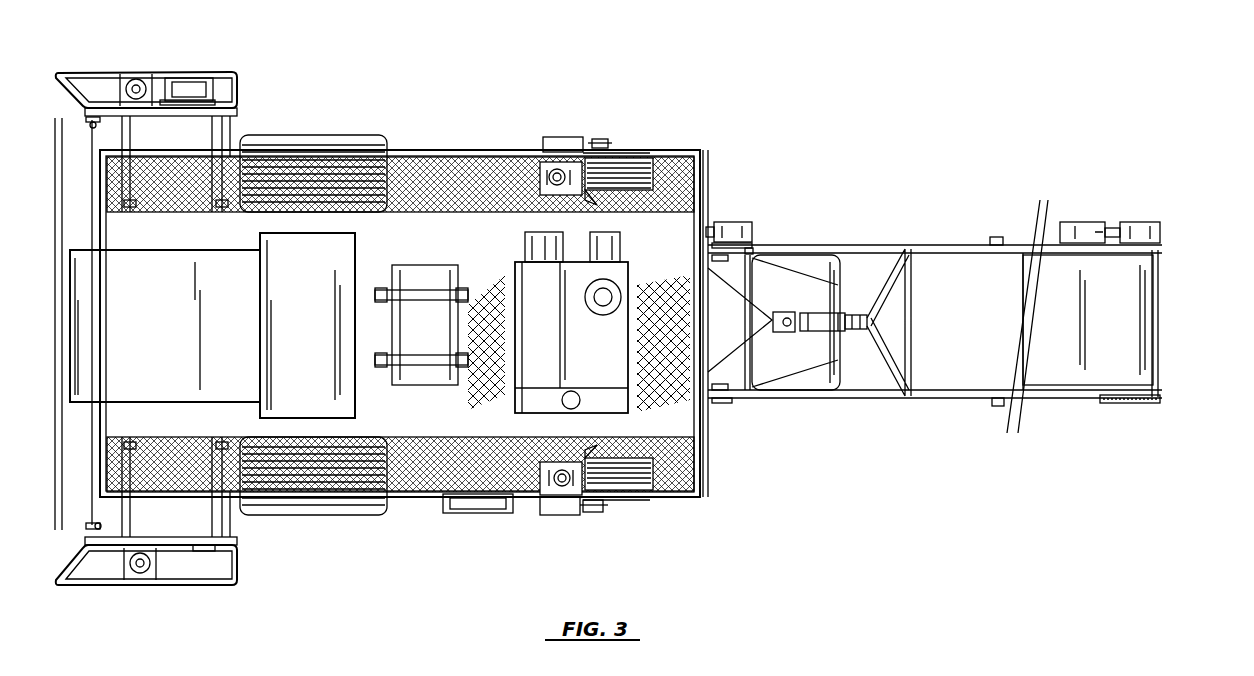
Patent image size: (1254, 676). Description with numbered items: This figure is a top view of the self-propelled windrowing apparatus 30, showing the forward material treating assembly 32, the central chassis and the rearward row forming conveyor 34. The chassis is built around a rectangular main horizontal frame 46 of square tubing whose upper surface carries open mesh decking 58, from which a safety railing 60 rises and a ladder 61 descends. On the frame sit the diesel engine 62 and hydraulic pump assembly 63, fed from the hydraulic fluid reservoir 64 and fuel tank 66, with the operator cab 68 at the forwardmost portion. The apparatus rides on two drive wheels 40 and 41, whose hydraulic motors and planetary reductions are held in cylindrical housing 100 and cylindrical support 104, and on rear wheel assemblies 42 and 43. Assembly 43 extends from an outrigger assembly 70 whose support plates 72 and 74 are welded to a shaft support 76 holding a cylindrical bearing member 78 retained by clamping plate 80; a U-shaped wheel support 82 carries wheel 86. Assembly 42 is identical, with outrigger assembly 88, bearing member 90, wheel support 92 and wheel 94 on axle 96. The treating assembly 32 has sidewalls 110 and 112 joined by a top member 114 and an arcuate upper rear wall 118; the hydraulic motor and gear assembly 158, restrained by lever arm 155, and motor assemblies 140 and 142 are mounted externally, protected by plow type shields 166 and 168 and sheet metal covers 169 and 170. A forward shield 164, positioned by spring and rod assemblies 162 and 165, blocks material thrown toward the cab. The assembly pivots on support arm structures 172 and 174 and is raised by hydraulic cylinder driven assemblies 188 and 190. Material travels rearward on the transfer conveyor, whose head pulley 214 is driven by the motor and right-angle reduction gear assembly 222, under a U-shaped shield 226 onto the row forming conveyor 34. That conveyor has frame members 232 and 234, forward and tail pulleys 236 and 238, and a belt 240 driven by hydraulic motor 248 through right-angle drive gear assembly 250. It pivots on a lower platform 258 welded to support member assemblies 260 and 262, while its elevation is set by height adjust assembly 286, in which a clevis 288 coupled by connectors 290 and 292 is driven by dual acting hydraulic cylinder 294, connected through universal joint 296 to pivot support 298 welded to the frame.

The windrowing apparatus 30 is at (873, 150).
The material treating assembly 32 is at (298, 88).
The row forming conveyor 34 is at (1150, 196).
The drive wheel 40 is at (350, 514).
The drive wheel 41 is at (328, 136).
The rear wheel assembly 42 is at (664, 125).
The rear wheel assembly 43 is at (630, 546).
The main horizontal frame 46 is at (708, 226).
The open mesh decking 58 is at (480, 175).
The safety railing 60 is at (447, 153).
The ladder 61 is at (485, 513).
The diesel engine 62 is at (520, 405).
The hydraulic pump assembly 63 is at (605, 245).
The hydraulic fluid reservoir 64 is at (340, 412).
The fuel tank 66 is at (425, 275).
The operator cab 68 is at (128, 336).
The outrigger assembly 70 is at (532, 543).
The support plate 72 is at (563, 462).
The support plate 74 is at (592, 456).
The shaft support 76 is at (542, 497).
The cylindrical bearing member 78 is at (563, 497).
The outer clamping plate 80 is at (594, 512).
The U-shaped wheel support 82 is at (552, 515).
The wheel 86 is at (640, 500).
The outrigger assembly 88 is at (555, 195).
The cylindrical bearing member 90 is at (560, 162).
The U-shaped wheel support 92 is at (570, 137).
The wheel 94 is at (645, 150).
The axle 96 is at (605, 138).
The cylindrical housing 100 is at (333, 440).
The cylindrical support 104 is at (330, 212).
The sidewall 110 is at (237, 545).
The sidewall 112 is at (225, 108).
The top member 114 is at (148, 533).
The upper rear wall 118 is at (232, 127).
The motor assembly 140 is at (142, 574).
The motor assembly 142 is at (137, 78).
The lever arm 155 is at (167, 78).
The hydraulic motor and gear assembly 158 is at (195, 78).
The spring and rod assembly 162 is at (70, 120).
The forward shield 164 is at (82, 235).
The spring and rod assembly 165 is at (86, 528).
The plow type shield 166 is at (103, 585).
The plow type shield 168 is at (83, 73).
The sheet metal cover 169 is at (237, 570).
The sheet metal cover 170 is at (234, 78).
The support arm structure 172 is at (252, 440).
The support arm structure 174 is at (247, 215).
The hydraulic cylinder driven assembly 188 is at (140, 440).
The hydraulic cylinder driven assembly 190 is at (137, 218).
The head pulley 214 is at (750, 400).
The hydraulic motor and right-angle reduction gear assembly 222 is at (750, 244).
The U-shaped shield 226 is at (820, 258).
The frame member 232 is at (1030, 405).
The frame member 234 is at (1025, 245).
The forward pulley 236 is at (753, 250).
The tail pulley 238 is at (1125, 403).
The belt 240 is at (1140, 318).
The hydraulic motor 248 is at (1078, 222).
The right-angle drive gear assembly 250 is at (1145, 222).
The lower platform 258 is at (730, 222).
The support member assembly 260 is at (702, 450).
The support member assembly 262 is at (708, 175).
The height adjust assembly 286 is at (928, 210).
The clevis 288 is at (885, 370).
The connector 290 is at (995, 406).
The connector 292 is at (993, 237).
The dual acting hydraulic cylinder 294 is at (852, 315).
The universal joint 296 is at (790, 312).
The pivot support 298 is at (742, 330).